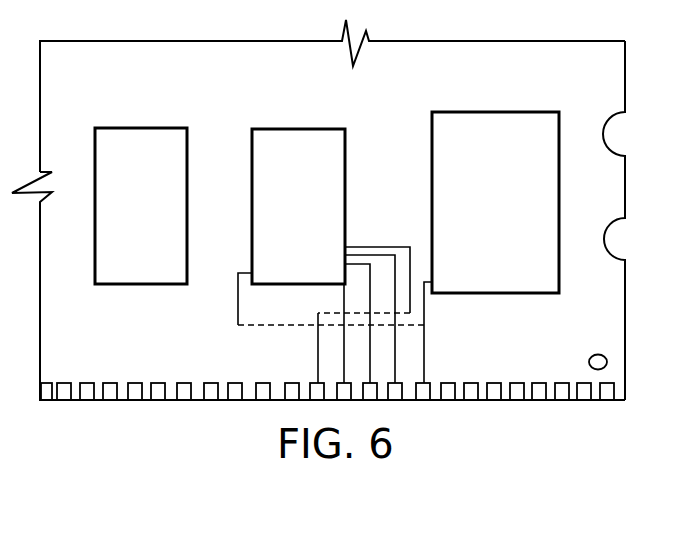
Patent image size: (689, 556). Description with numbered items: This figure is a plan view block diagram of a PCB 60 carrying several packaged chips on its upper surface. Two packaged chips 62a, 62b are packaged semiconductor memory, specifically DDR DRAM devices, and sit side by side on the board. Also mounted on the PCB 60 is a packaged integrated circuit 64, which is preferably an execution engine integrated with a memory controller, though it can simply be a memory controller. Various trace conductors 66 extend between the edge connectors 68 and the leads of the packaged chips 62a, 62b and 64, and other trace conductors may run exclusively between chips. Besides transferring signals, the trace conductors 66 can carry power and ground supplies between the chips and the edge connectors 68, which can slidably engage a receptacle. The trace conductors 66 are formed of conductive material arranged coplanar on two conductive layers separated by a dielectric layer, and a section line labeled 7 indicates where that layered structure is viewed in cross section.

The PCB 60 is at (92, 354).
The packaged chip 62a is at (188, 155).
The packaged chip 62b is at (345, 155).
The packaged integrated circuit 64 is at (559, 160).
The trace conductors 66 is at (318, 332).
The edge connectors 68 is at (625, 313).
The section line for FIG. 7 is at (297, 315).